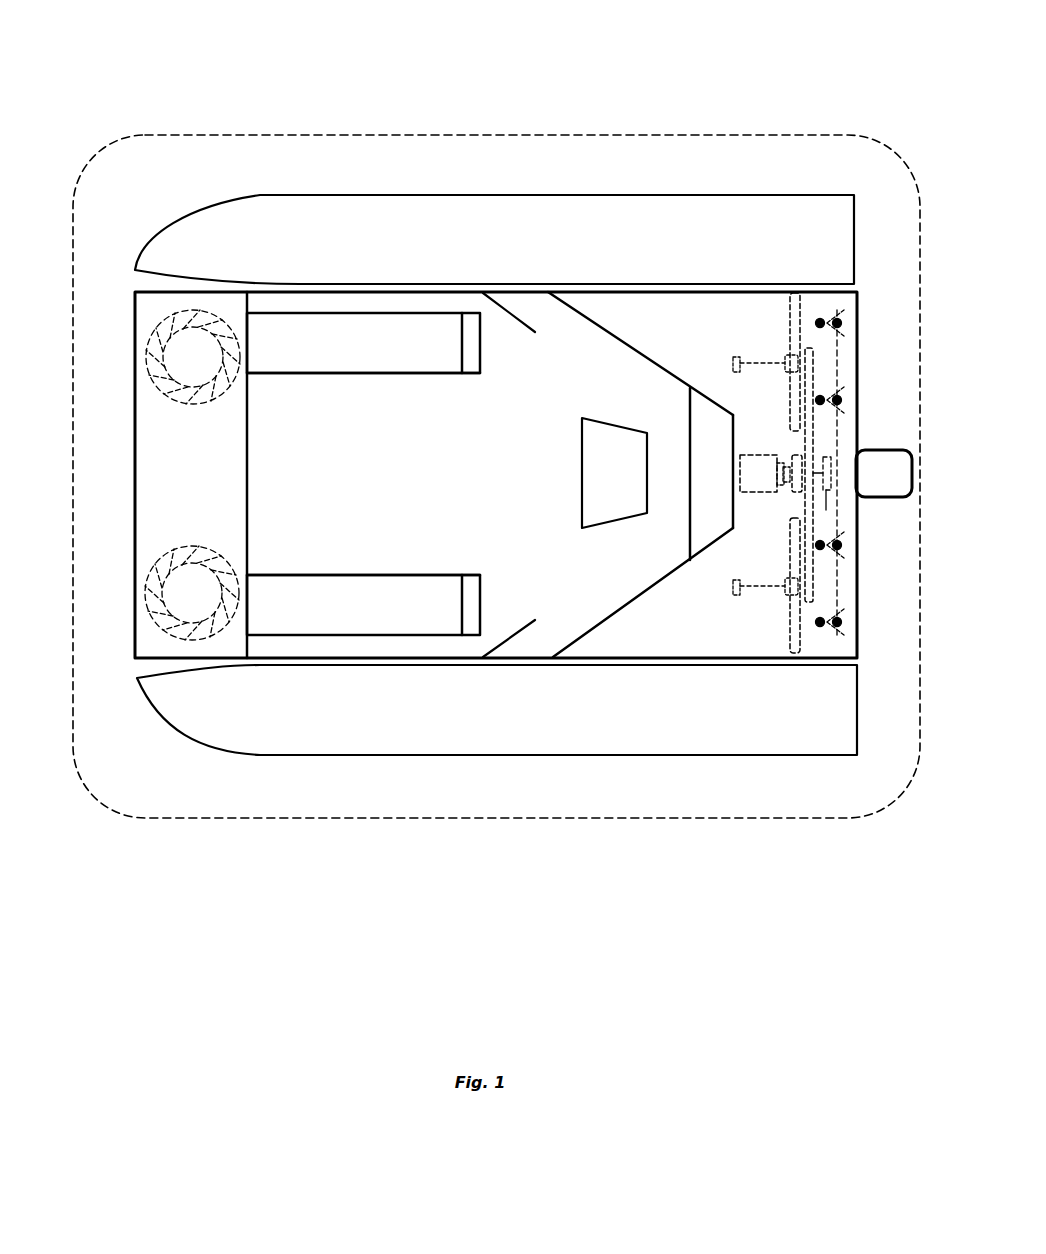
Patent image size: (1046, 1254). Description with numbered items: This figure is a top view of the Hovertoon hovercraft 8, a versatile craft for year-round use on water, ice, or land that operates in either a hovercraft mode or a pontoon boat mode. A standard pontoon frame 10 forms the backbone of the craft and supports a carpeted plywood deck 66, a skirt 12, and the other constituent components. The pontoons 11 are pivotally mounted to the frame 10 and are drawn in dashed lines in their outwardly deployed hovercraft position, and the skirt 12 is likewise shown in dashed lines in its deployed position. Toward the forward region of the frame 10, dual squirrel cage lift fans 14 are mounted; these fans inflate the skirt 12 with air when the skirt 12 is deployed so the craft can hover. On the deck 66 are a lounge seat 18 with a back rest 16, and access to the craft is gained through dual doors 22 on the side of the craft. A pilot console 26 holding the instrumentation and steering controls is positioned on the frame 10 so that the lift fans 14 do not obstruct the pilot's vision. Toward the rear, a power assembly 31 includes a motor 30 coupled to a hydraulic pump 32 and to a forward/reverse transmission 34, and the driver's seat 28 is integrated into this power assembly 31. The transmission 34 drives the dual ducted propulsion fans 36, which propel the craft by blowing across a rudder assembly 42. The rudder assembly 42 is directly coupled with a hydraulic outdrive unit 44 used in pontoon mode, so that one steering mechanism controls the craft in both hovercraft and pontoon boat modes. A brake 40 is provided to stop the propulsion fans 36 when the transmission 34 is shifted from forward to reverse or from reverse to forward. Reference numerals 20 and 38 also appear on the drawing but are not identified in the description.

The hovercraft 8 is at (116, 88).
The hovercraft frame 10 is at (135, 286).
The pontoons 11 is at (265, 196).
The skirt 12 is at (207, 816).
The lift fans 14 is at (157, 555).
The back rest 16 is at (321, 303).
The lounge seat 18 is at (387, 338).
The mounting bracket 20 is at (468, 334).
The dual doors 22 is at (507, 309).
The pilot console 26 is at (610, 527).
The driver's seat 28 is at (707, 427).
The motor 30 is at (747, 453).
The power assembly 31 is at (744, 506).
The hydraulic pump 32 is at (778, 493).
The forward/reverse transmission 34 is at (790, 453).
The propulsion fans 36 is at (786, 355).
The guide rail 38 is at (809, 348).
The brake 40 is at (819, 627).
The rudder assembly 42 is at (840, 636).
The outdrive unit 44 is at (880, 450).
The deck 66 is at (558, 398).